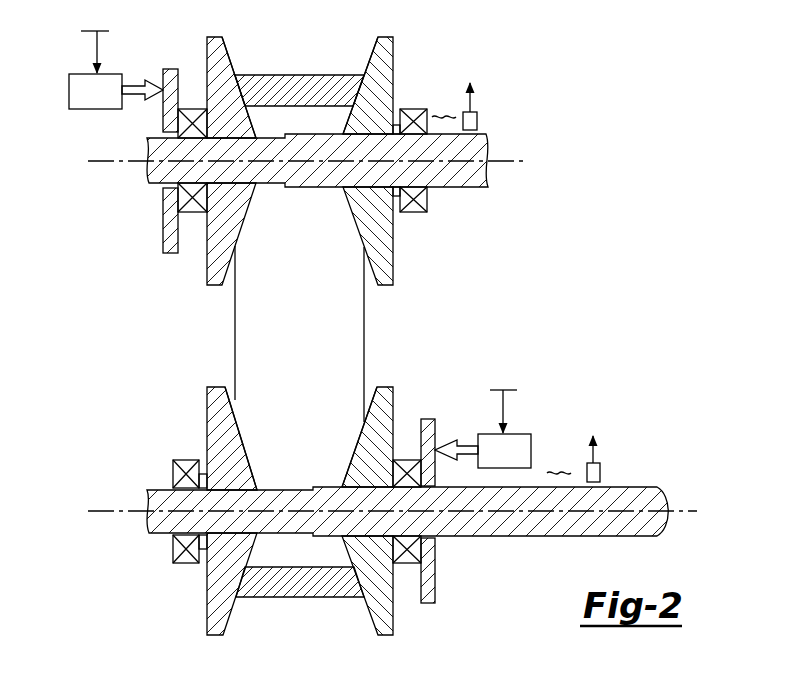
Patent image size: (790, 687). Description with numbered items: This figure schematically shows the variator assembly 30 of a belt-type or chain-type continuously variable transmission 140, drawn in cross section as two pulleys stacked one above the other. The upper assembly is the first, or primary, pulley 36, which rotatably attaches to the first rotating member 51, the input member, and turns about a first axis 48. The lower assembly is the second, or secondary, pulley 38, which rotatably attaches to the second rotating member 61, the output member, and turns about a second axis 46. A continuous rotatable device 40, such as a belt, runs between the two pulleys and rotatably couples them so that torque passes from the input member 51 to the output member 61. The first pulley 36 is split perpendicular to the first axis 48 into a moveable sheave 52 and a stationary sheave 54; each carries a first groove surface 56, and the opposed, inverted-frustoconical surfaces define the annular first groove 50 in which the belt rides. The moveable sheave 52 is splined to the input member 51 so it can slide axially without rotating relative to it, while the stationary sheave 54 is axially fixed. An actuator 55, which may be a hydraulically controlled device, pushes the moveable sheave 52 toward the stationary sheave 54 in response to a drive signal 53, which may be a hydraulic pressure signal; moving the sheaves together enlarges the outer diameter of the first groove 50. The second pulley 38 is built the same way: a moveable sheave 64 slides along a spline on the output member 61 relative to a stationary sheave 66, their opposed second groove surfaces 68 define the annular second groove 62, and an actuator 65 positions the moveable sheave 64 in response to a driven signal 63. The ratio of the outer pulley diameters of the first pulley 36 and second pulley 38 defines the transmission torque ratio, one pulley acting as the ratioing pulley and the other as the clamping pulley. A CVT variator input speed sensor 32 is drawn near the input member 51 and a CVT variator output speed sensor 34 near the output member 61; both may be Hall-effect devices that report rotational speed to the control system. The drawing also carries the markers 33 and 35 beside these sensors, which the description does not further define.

The variator assembly 30 is at (355, 333).
The CVT variator input speed sensor 32 is at (477, 122).
The first sheave position 33 is at (444, 106).
The CVT variator output speed sensor 34 is at (600, 470).
The second sheave position 35 is at (559, 463).
The first pulley 36 is at (308, 144).
The second pulley 38 is at (308, 498).
The continuous rotatable device 40 is at (364, 318).
The second axis 46 is at (110, 514).
The first axis 48 is at (100, 164).
The annular first groove 50 is at (293, 74).
The first rotating member 51 is at (467, 188).
The moveable first sheave 52 is at (207, 52).
The drive signal 53 is at (95, 39).
The stationary first sheave 54 is at (389, 52).
The actuator 55 is at (69, 90).
The first groove surface 56 is at (231, 63).
The second rotating member 61 is at (528, 537).
The annular second groove 62 is at (297, 604).
The driven signal 63 is at (503, 400).
The moveable second sheave 64 is at (393, 398).
The actuator 65 is at (525, 434).
The stationary second sheave 66 is at (207, 430).
The second groove surface 68 is at (230, 392).
The continuously variable transmission 140 is at (277, 498).